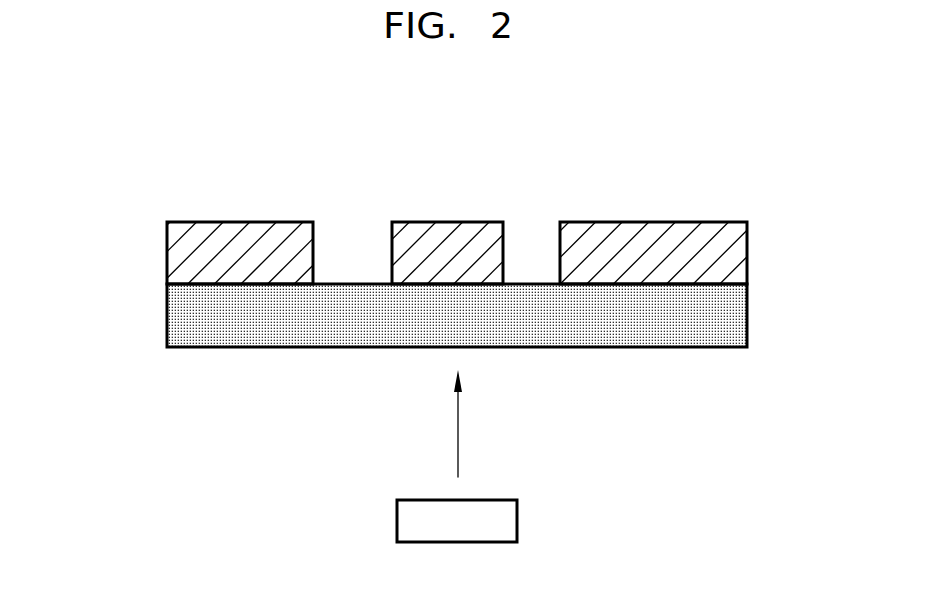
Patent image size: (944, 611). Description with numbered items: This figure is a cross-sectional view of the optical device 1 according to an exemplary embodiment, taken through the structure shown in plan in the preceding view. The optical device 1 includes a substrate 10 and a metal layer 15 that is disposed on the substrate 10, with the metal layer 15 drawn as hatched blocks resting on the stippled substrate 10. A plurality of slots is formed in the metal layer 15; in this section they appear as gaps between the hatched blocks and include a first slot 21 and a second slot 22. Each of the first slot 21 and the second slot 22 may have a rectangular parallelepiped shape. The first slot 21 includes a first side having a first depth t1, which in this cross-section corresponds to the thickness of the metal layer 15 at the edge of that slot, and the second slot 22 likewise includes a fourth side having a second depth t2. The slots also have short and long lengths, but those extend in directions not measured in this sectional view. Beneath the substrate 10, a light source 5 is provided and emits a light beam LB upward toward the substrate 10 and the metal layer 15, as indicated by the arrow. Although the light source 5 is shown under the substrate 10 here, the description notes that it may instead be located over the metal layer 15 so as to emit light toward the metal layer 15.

The optical device 1 is at (114, 249).
The light source 5 is at (517, 522).
The substrate 10 is at (733, 318).
The metal layer 15 is at (729, 252).
The first slot 21 is at (348, 247).
The second slot 22 is at (527, 247).
The first depth t1 is at (322, 232).
The second depth t2 is at (512, 232).
The light beam LB is at (458, 425).